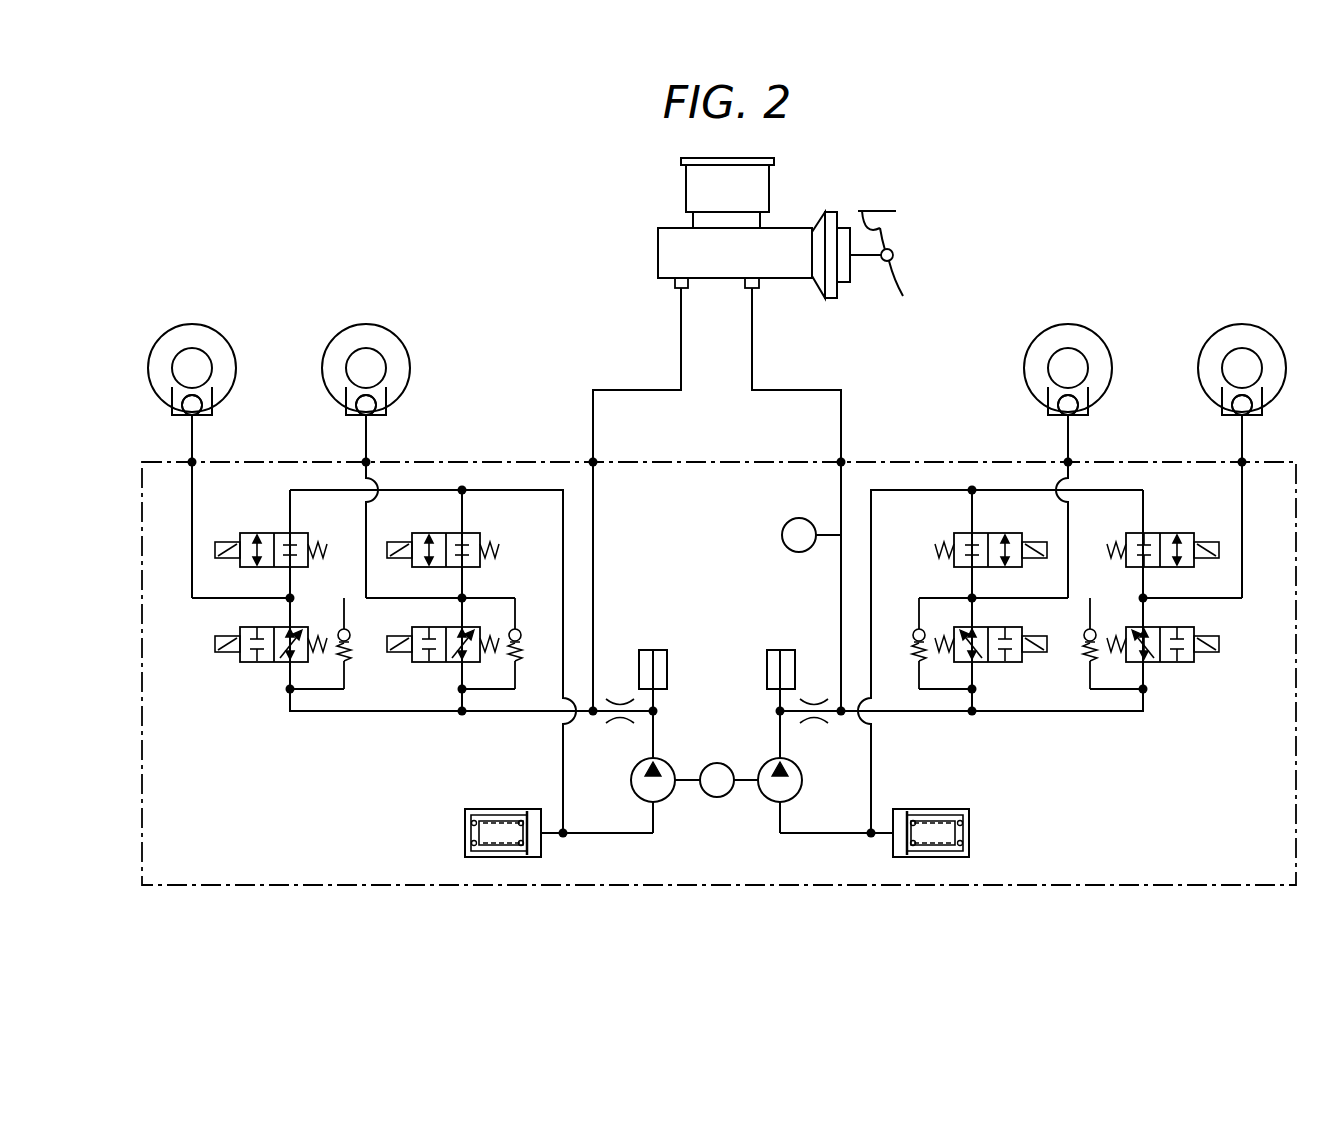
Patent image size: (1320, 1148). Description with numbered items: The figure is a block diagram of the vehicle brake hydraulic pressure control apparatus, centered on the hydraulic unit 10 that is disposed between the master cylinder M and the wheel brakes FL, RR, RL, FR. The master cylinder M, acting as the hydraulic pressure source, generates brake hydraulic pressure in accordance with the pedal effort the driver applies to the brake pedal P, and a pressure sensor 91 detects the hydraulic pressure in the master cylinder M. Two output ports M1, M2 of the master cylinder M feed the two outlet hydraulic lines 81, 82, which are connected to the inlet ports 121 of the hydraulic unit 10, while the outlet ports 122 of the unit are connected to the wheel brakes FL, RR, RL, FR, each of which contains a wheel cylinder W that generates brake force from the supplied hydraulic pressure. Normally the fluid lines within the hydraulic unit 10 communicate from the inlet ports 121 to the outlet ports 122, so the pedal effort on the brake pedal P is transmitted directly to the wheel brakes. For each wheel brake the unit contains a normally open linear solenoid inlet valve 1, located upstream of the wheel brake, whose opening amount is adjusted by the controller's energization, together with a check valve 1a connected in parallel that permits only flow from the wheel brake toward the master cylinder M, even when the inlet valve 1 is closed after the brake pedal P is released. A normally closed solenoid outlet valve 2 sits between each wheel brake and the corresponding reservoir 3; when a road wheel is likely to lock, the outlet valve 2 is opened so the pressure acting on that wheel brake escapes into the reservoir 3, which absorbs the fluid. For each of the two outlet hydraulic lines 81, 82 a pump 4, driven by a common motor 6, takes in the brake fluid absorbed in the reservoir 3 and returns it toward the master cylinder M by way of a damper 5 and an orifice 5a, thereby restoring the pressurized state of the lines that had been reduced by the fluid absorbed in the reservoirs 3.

The hydraulic unit 10 is at (718, 462).
The master cylinder M is at (658, 251).
The output port M1 is at (672, 290).
The output port M2 is at (764, 290).
The brake pedal P is at (902, 298).
The outlet hydraulic line 81 is at (593, 400).
The outlet hydraulic line 82 is at (841, 400).
The inlet port 121 is at (593, 462).
The outlet port 122 is at (194, 461).
The wheel brake FL is at (188, 318).
The wheel brake RR is at (362, 318).
The wheel brake RL is at (1072, 318).
The wheel brake FR is at (1248, 318).
The wheel cylinder W is at (180, 410).
The outlet valve 2 is at (248, 533).
The inlet valve 1 is at (248, 663).
The check valve 1a is at (350, 644).
The damper 5 is at (652, 650).
The orifice 5a is at (620, 700).
The pump 4 is at (668, 800).
The motor 6 is at (717, 763).
The reservoir 3 is at (458, 826).
The pressure sensor 91 is at (789, 522).